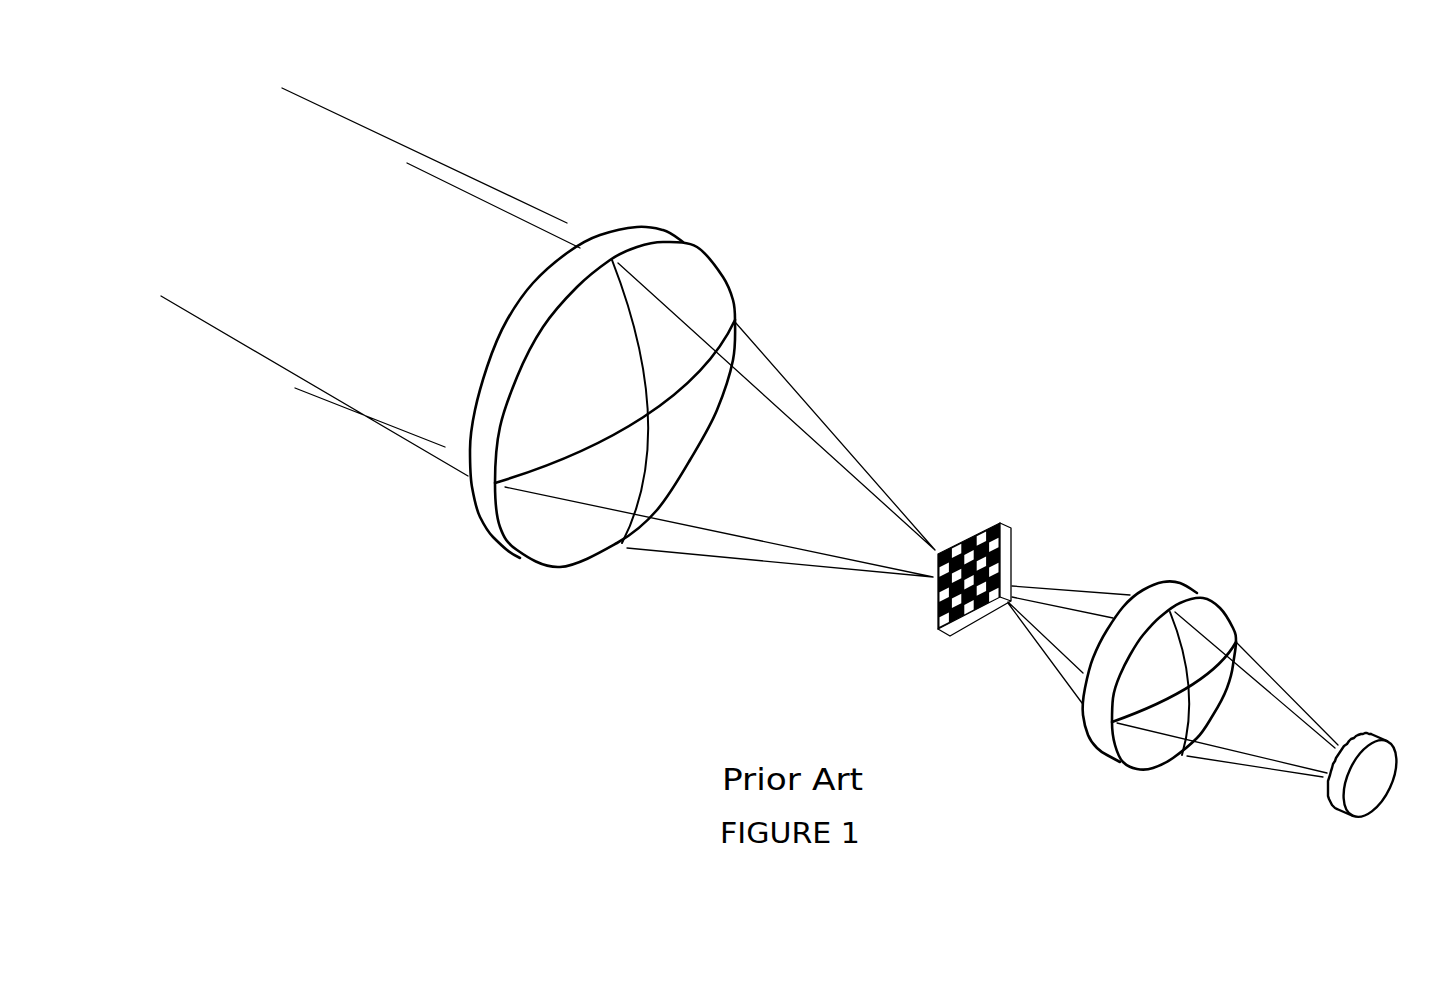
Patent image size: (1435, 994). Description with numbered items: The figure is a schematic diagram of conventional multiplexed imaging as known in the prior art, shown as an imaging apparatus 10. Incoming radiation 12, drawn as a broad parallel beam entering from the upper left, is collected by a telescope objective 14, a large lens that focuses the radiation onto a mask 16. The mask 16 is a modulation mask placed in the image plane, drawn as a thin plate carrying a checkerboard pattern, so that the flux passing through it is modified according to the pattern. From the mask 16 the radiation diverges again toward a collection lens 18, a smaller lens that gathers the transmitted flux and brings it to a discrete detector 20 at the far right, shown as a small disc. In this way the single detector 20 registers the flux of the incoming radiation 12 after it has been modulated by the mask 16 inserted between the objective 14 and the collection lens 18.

The imaging apparatus 10 is at (800, 686).
The incoming radiation 12 is at (405, 146).
The telescope objective 14 is at (680, 237).
The mask 16 is at (1000, 522).
The collection lens 18 is at (1190, 586).
The discrete detector 20 is at (1377, 733).